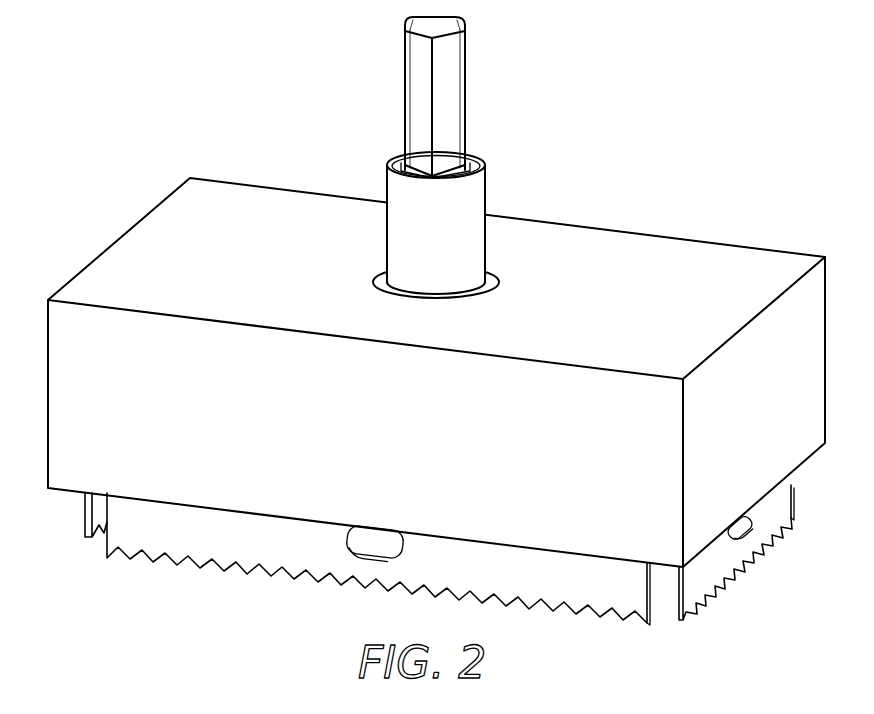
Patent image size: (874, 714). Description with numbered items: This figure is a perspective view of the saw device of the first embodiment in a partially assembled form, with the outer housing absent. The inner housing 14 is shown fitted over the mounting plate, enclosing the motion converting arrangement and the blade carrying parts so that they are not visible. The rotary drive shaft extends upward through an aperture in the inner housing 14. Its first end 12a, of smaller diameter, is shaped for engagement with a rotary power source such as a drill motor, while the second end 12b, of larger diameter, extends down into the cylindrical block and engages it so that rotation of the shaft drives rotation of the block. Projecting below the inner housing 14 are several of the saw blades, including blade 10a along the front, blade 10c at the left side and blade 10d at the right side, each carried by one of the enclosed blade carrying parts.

The inner housing 14 is at (705, 247).
The first end of the rotary drive shaft 12a is at (454, 75).
The second end of the rotary drive shaft 12b is at (479, 189).
The blade 10a is at (240, 568).
The blade 10c is at (92, 519).
The blade 10d is at (710, 572).